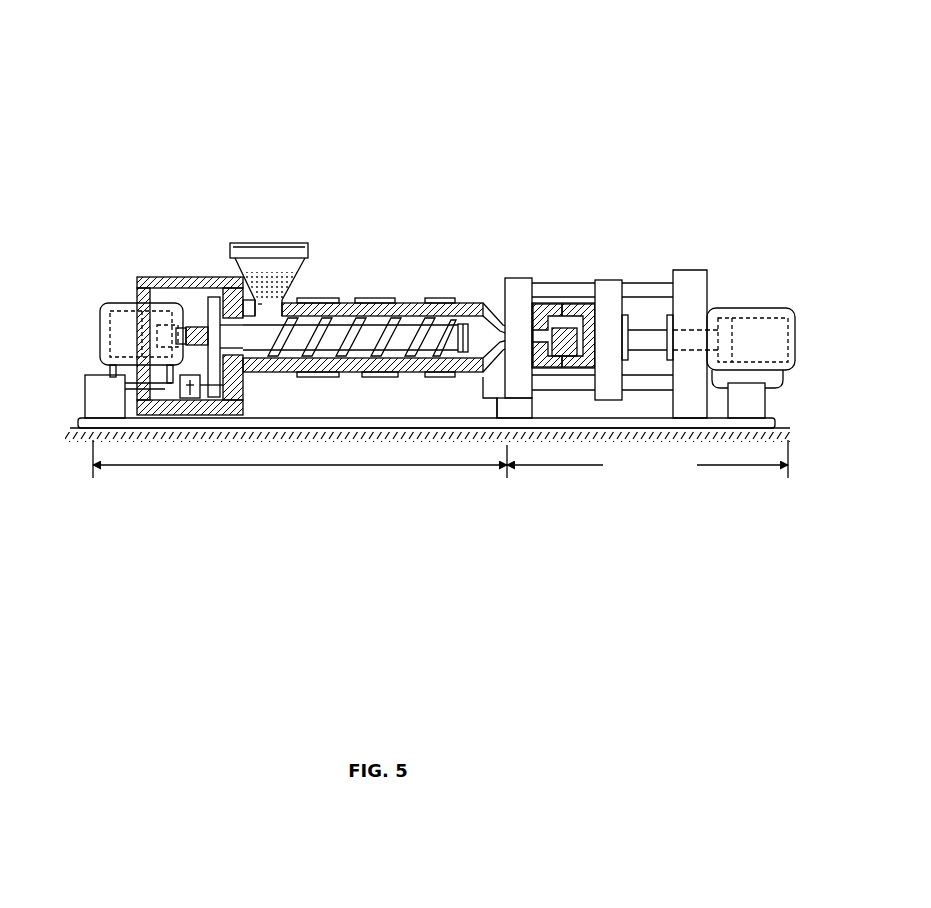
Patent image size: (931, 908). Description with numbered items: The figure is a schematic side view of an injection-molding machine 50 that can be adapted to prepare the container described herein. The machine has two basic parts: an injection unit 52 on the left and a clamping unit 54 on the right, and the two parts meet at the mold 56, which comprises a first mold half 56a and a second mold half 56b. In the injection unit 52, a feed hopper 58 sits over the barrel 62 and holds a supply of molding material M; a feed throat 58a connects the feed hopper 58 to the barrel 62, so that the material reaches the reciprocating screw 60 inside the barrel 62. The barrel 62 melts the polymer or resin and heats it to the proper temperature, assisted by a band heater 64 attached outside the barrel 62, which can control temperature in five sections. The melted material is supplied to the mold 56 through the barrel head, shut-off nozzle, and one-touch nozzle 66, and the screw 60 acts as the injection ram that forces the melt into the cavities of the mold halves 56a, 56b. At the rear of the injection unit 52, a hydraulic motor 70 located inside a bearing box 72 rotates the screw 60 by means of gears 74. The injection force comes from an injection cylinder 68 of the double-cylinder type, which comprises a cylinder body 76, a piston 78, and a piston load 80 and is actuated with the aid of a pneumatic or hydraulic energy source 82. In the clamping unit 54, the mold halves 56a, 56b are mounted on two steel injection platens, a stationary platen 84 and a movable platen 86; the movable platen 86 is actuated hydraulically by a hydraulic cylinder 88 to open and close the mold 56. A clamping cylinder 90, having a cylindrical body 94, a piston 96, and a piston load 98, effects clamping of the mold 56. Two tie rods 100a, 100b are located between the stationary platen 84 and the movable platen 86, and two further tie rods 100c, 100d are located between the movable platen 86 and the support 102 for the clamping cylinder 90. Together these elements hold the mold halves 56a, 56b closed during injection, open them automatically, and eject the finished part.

The injection-molding machine 50 is at (519, 172).
The injection unit 52 is at (326, 476).
The clamping unit 54 is at (679, 473).
The mold 56 is at (582, 296).
The first mold half 56a is at (567, 367).
The second mold half 56b is at (588, 365).
The feed hopper 58 is at (266, 255).
The feed throat 58a is at (275, 313).
The reciprocating screw 60 is at (409, 338).
The barrel 62 is at (349, 300).
The band heater 64 is at (313, 298).
The one-touch nozzle 66 is at (502, 324).
The injection cylinder 68 is at (119, 300).
The hydraulic motor 70 is at (193, 392).
The bearing box 72 is at (167, 345).
The gears 74 is at (222, 368).
The cylinder body 76 is at (120, 332).
The piston 78 is at (170, 340).
The piston load 80 is at (222, 368).
The pneumatic or hydraulic energy source 82 is at (107, 405).
The stationary platen 84 is at (518, 276).
The movable platen 86 is at (609, 278).
The hydraulic cylinder 88 is at (752, 408).
The clamping cylinder 90 is at (748, 303).
The cylindrical body 94 is at (760, 345).
The piston 96 is at (705, 352).
The piston load 98 is at (660, 343).
The tie rod 100a is at (590, 282).
The tie rod 100b is at (543, 385).
The tie rod 100c is at (649, 279).
The tie rod 100d is at (642, 388).
The support 102 is at (695, 382).
The molding material M is at (265, 275).